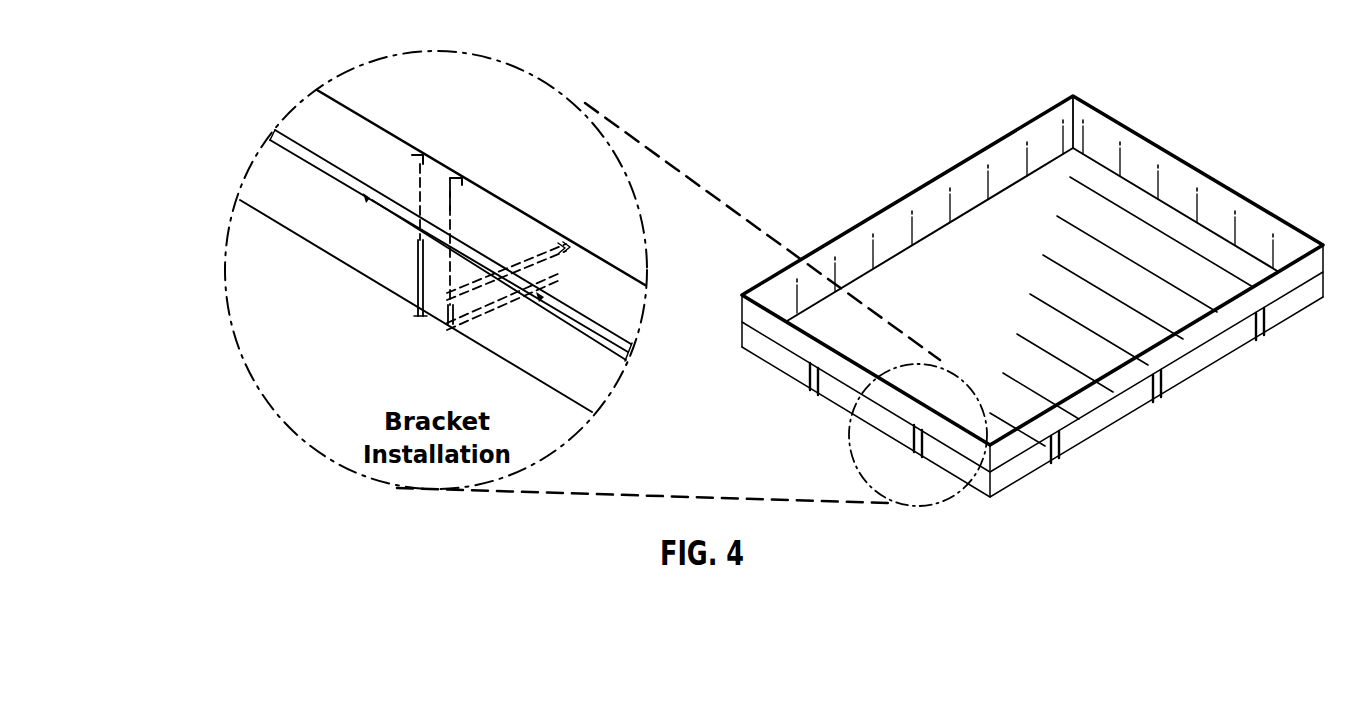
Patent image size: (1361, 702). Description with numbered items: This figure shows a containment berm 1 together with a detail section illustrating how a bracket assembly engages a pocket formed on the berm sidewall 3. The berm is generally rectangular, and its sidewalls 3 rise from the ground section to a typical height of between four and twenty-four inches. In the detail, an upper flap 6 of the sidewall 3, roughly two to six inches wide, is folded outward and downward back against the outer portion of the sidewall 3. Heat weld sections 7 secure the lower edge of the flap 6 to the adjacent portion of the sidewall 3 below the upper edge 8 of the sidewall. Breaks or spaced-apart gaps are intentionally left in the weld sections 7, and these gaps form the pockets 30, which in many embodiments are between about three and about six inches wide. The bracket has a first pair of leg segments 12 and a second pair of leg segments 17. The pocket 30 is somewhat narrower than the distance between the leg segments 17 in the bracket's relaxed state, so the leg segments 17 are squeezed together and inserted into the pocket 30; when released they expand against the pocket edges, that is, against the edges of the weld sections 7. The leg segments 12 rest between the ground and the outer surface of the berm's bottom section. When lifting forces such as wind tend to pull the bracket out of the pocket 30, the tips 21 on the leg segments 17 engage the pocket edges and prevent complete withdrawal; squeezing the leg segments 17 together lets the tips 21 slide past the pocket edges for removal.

The containment berm 1 is at (949, 117).
The sidewall 3 is at (596, 373).
The upper flap 6 is at (628, 290).
The heat weld section 7 is at (662, 236).
The upper edge 8 is at (349, 107).
The first pair of leg segments 12 is at (567, 243).
The second pair of leg segments 17 is at (453, 213).
The tip 21 is at (420, 153).
The pocket 30 is at (437, 242).